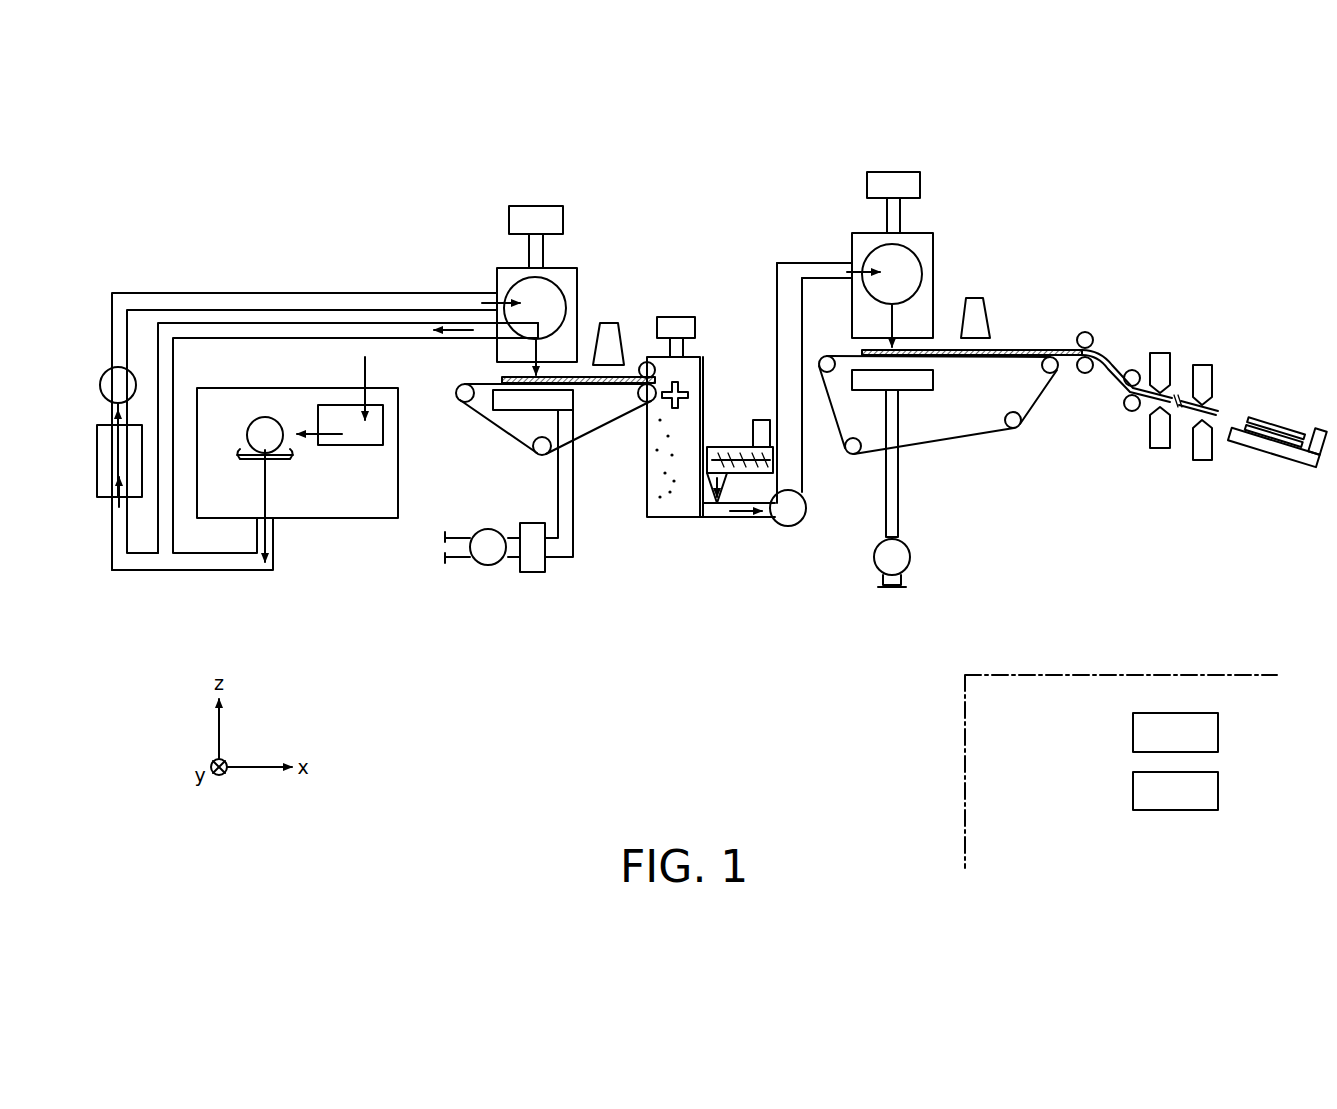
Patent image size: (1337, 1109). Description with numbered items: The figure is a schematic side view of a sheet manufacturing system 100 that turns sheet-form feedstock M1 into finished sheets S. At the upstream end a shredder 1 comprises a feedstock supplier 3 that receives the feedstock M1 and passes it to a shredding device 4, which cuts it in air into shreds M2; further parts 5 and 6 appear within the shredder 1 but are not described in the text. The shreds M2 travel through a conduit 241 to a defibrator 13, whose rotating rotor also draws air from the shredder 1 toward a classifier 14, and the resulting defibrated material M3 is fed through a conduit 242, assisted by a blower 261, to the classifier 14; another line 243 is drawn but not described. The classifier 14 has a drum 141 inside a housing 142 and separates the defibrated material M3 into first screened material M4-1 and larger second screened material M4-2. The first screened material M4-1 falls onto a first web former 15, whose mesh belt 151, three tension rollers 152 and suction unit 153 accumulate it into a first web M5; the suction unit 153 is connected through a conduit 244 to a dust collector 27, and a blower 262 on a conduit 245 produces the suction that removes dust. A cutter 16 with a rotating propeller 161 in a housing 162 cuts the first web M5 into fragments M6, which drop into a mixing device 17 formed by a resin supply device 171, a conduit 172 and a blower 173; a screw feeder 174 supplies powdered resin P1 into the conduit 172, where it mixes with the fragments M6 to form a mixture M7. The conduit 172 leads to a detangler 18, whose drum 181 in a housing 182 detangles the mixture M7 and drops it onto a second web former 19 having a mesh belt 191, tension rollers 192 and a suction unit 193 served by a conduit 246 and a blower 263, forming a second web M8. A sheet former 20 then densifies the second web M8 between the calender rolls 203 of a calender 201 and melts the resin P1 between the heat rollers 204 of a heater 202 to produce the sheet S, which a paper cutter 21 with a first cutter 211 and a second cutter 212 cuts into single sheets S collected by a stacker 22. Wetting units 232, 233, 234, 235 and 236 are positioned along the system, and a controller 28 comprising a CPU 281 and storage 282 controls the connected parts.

The sheet manufacturing system 100 is at (1072, 141).
The shredder 1 is at (402, 447).
The feedstock supplier 3 is at (385, 412).
The shredding device 4 is at (240, 410).
The supply roller 5 is at (262, 417).
The roller support 6 is at (248, 460).
The defibrator 13 is at (97, 462).
The classifier 14 is at (593, 265).
The drum 141 is at (562, 290).
The housing 142 is at (570, 270).
The first web former 15 is at (584, 449).
The mesh belt 151 is at (590, 452).
The tension rollers 152 is at (458, 388).
The suction unit 153 is at (575, 399).
The cutter 16 is at (701, 360).
The propeller 161 is at (688, 390).
The housing 162 is at (657, 520).
The mixing device 17 is at (770, 534).
The resin supply device 171 is at (760, 420).
The conduit 172 is at (805, 482).
The blower 173 is at (802, 522).
The screw feeder 174 is at (720, 447).
The detangler 18 is at (955, 230).
The drum 181 is at (918, 262).
The housing 182 is at (925, 233).
The second web former 19 is at (986, 441).
The mesh belt 191 is at (942, 436).
The tension rollers 192 is at (827, 356).
The suction unit 193 is at (934, 381).
The sheet former 20 is at (1131, 324).
The calender 201 is at (1132, 302).
The heater 202 is at (1148, 450).
The calender rolls 203 is at (1077, 335).
The heat rollers 204 is at (1120, 390).
The paper cutter 21 is at (1272, 308).
The first cutter 211 is at (1173, 345).
The second cutter 212 is at (1216, 350).
The stacker 22 is at (1287, 458).
The wetting unit 232 is at (535, 206).
The wetting unit 233 is at (677, 317).
The wetting unit 234 is at (894, 172).
The wetting unit 235 is at (609, 324).
The wetting unit 236 is at (977, 298).
The conduit 241 is at (156, 570).
The conduit 242 is at (142, 293).
The duct 243 is at (200, 322).
The conduit 244 is at (576, 531).
The conduit 245 is at (513, 560).
The conduit 246 is at (899, 510).
The blower 261 is at (106, 372).
The blower 262 is at (484, 566).
The blower 263 is at (911, 558).
The dust collector 27 is at (535, 573).
The controller 28 is at (1063, 715).
The CPU 281 is at (1133, 733).
The storage 282 is at (1133, 792).
The feedstock M1 is at (362, 374).
The shreds M2 is at (118, 503).
The defibrated material M3 is at (117, 432).
The first screened material M4-1 is at (532, 352).
The second screened material M4-2 is at (443, 326).
The first web M5 is at (647, 366).
The fragments M6 is at (670, 427).
The mixture M7 is at (742, 517).
The second web M8 is at (955, 346).
The resin P1 is at (724, 485).
The sheet S is at (1146, 380).